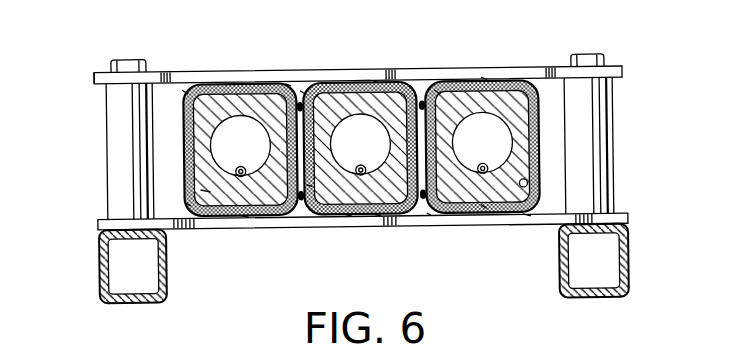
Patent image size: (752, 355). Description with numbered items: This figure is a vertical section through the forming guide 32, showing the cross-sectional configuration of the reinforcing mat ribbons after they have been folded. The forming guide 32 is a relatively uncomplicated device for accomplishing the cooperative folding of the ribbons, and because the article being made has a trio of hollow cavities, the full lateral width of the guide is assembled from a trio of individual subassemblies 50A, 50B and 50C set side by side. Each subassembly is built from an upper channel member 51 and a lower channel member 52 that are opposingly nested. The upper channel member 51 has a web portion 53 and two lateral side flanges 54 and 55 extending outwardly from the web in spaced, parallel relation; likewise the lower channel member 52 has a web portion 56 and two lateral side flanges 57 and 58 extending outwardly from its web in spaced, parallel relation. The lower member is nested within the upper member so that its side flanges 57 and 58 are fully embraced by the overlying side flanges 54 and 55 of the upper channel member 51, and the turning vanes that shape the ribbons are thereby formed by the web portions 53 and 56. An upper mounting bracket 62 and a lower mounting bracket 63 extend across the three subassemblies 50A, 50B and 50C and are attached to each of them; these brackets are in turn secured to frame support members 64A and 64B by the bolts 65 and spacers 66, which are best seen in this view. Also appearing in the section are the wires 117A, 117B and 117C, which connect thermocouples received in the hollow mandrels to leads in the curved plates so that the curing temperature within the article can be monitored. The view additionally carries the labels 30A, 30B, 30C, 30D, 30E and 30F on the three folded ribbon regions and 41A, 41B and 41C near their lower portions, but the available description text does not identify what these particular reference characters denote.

The forming guide 32 is at (94, 68).
The upper mounting bracket 62 is at (625, 75).
The lower mounting bracket 63 is at (627, 222).
The bolts 65 is at (128, 56).
The spacers 66 is at (117, 159).
The subassembly 50A is at (183, 137).
The subassembly 50B is at (364, 69).
The subassembly 50C is at (545, 127).
The first cell wall 30A is at (188, 115).
The first cell terminal opening 30B is at (287, 148).
The second cell wall 30C is at (312, 110).
The second cell terminal opening 30D is at (410, 182).
The third cell terminal opening 30E is at (443, 134).
The third cell wall 30F is at (527, 187).
The upper channel member 51 is at (247, 69).
The lower channel member 52 is at (211, 226).
The web portion 53 is at (289, 83).
The lateral side flange 54 is at (186, 90).
The lateral side flange 55 is at (300, 96).
The web portion 56 is at (312, 214).
The lateral side flange 57 is at (207, 186).
The lateral side flange 58 is at (247, 174).
The first cell bottom 41A is at (187, 201).
The second cell bottom 41B is at (379, 218).
The third cell bottom 41C is at (526, 220).
The wire 117A is at (244, 217).
The wire 117B is at (348, 216).
The wire 117C is at (485, 209).
The frame support member 64A is at (100, 283).
The frame support member 64B is at (628, 261).